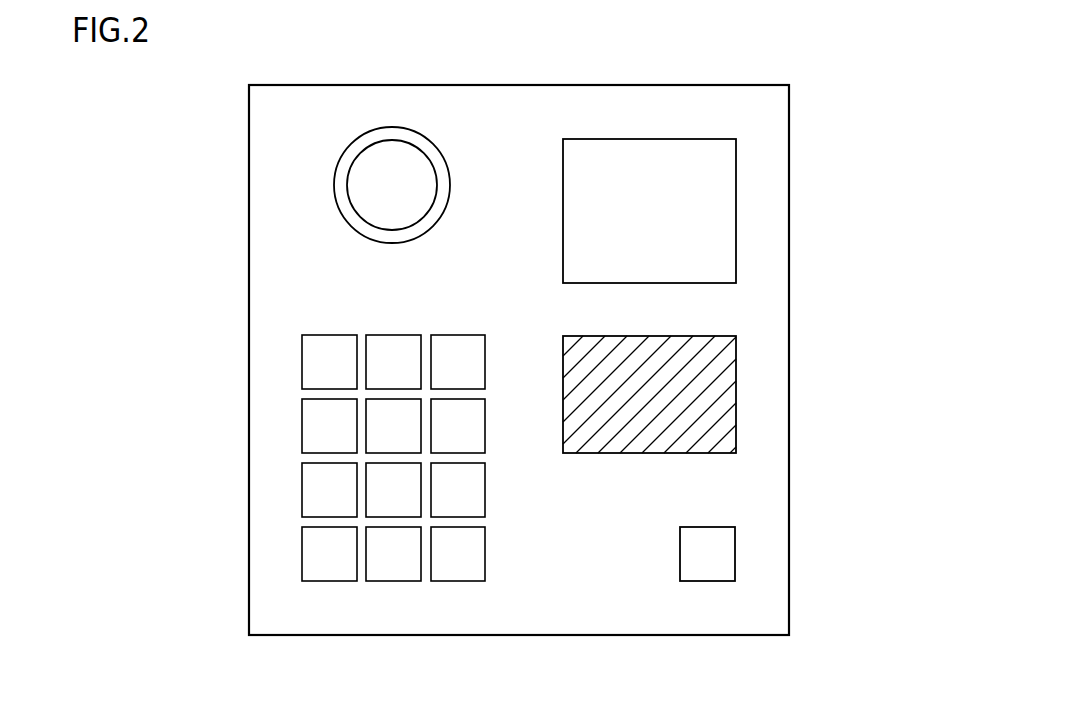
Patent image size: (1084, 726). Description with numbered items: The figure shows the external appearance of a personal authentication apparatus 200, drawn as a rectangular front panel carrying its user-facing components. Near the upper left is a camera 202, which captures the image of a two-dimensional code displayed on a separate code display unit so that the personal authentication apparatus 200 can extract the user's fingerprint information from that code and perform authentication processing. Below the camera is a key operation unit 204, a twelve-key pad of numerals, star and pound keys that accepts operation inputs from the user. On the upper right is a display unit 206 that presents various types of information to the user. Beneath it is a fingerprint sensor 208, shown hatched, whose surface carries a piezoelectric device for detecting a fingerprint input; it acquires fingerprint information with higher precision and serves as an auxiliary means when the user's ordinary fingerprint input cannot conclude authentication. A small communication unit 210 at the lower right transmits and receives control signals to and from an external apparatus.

The personal authentication apparatus 200 is at (538, 713).
The camera 202 is at (333, 185).
The key operation unit 204 is at (290, 335).
The display unit 206 is at (736, 210).
The fingerprint sensor 208 is at (736, 393).
The communication unit 210 is at (735, 553).